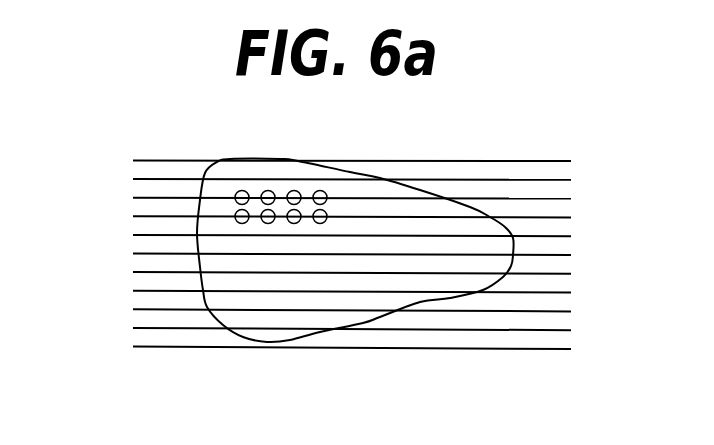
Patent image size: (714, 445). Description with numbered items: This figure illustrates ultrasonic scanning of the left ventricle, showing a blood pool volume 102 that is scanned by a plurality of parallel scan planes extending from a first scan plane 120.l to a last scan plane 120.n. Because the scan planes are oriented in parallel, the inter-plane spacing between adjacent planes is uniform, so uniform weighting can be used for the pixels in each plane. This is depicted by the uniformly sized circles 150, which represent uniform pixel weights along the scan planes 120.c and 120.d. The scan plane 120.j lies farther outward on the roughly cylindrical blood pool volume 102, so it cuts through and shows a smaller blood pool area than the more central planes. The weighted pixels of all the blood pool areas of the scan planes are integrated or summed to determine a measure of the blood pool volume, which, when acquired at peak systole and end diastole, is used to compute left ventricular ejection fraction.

The scan plane 120.l is at (152, 160).
The scan plane 120.c is at (142, 198).
The scan plane 120.d is at (142, 217).
The scan plane 120.j is at (140, 310).
The scan plane 120.n is at (163, 347).
The uniformly sized circles 150 is at (282, 189).
The blood pool volume 102 is at (513, 263).